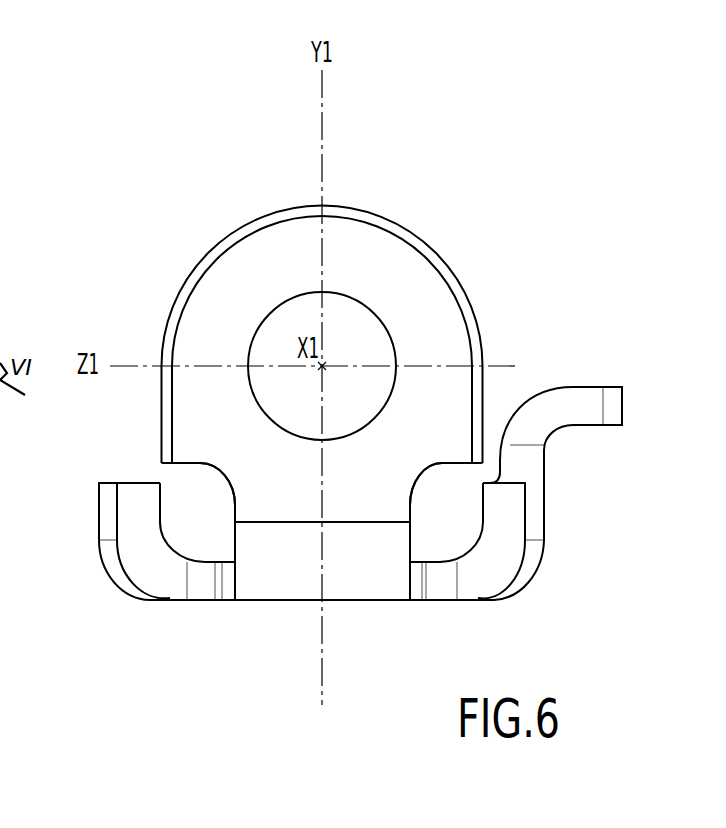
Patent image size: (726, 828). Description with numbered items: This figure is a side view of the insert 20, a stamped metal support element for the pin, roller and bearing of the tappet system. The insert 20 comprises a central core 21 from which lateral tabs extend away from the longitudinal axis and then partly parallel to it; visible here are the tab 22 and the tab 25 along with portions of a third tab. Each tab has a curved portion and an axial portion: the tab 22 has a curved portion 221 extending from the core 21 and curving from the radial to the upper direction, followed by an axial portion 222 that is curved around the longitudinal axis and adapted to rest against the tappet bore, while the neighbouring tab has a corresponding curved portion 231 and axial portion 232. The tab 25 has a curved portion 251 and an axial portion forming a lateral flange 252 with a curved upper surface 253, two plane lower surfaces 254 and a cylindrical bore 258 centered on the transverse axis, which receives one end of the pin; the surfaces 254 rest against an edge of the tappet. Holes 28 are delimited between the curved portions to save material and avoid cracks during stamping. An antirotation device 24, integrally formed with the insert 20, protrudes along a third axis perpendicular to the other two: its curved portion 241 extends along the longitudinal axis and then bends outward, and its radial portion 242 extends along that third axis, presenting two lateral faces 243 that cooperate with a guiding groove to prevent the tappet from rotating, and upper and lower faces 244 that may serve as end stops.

The insert 20 is at (447, 193).
The central core 21 is at (293, 613).
The lateral tab 22 is at (100, 608).
The curved portion 221 is at (160, 567).
The axial portion 222 is at (145, 520).
The curved portion 231 is at (497, 578).
The axial portion 232 is at (515, 520).
The antirotation device 24 is at (548, 357).
The curved portion 241 is at (540, 428).
The radial portion 242 is at (578, 400).
The lateral faces 243 is at (593, 408).
The upper and lower faces 244 is at (608, 385).
The lateral tab 25 is at (152, 280).
The curved portion 251 is at (365, 555).
The lateral flange 252 is at (228, 287).
The curved upper surface 253 is at (252, 218).
The plane lower surfaces 254 is at (187, 469).
The cylindrical bore 258 is at (355, 301).
The holes 28 is at (212, 524).